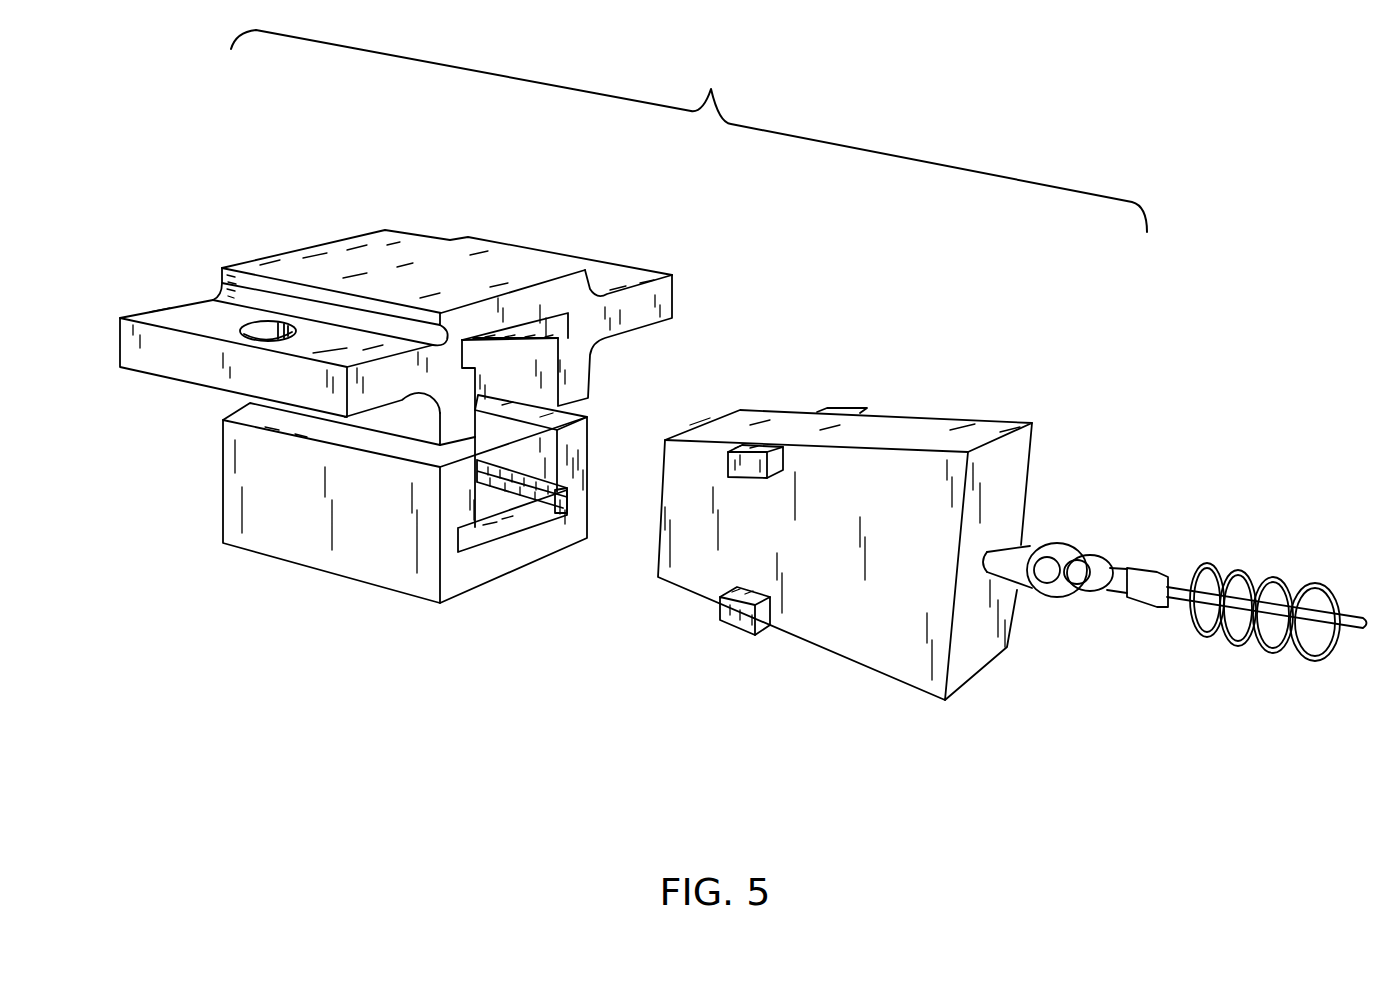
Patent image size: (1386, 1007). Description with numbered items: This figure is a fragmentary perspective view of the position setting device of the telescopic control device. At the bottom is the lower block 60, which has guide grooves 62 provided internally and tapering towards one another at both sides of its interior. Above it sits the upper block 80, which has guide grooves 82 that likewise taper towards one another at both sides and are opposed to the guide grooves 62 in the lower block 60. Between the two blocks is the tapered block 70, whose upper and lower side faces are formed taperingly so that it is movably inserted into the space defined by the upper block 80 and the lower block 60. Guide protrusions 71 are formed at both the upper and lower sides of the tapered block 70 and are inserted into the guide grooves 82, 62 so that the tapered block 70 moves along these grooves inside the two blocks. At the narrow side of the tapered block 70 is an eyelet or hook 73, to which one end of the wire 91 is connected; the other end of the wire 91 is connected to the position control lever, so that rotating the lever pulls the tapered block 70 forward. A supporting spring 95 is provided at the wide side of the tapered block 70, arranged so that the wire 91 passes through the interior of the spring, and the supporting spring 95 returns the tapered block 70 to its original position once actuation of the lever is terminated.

The lower block 60 is at (284, 616).
The guide grooves 62 is at (537, 493).
The tapered block 70 is at (918, 356).
The guide protrusions 71 is at (747, 468).
The eyelet or hook 73 is at (1047, 543).
The upper block 80 is at (635, 204).
The guide grooves 82 is at (592, 338).
The wire 91 is at (1180, 577).
The supporting spring 95 is at (1310, 580).